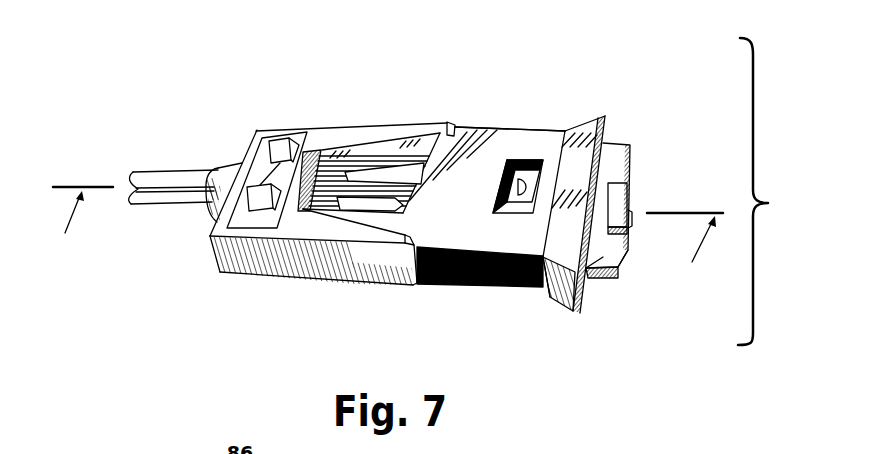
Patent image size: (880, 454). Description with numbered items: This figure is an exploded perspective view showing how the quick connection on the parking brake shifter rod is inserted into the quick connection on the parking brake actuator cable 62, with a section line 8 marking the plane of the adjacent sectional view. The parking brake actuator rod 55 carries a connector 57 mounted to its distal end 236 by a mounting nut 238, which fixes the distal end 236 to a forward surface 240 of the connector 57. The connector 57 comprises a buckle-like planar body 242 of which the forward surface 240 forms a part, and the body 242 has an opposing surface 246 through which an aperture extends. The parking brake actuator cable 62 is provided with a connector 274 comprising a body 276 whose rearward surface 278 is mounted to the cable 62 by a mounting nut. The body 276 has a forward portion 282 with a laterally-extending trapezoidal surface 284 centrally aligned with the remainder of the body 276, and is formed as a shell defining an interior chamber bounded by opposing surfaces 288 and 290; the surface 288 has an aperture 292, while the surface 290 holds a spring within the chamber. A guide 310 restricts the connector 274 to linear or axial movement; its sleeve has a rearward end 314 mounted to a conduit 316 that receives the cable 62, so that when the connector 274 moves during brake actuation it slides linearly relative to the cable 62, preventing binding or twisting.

The section line 8- 8 is at (386, 225).
The actuator rod 55 is at (769, 191).
The connector 57 is at (606, 258).
The parking brake actuator cable 62 is at (343, 202).
The distal end 236 is at (633, 212).
The mounting nut 238 is at (624, 178).
The forward surface 240 is at (622, 262).
The body 242 is at (612, 287).
The opposing surface 246 is at (618, 148).
The connector 274 is at (566, 128).
The body 276 is at (572, 130).
The rearward surface 278 is at (403, 197).
The forward portion 282 is at (540, 243).
The trapezoidal surface 284 is at (556, 250).
The surface 288 is at (497, 155).
The surface 290 is at (449, 283).
The aperture 292 is at (520, 167).
The guide 310 is at (327, 122).
The rearward end 314 is at (254, 147).
The conduit 316 is at (191, 180).